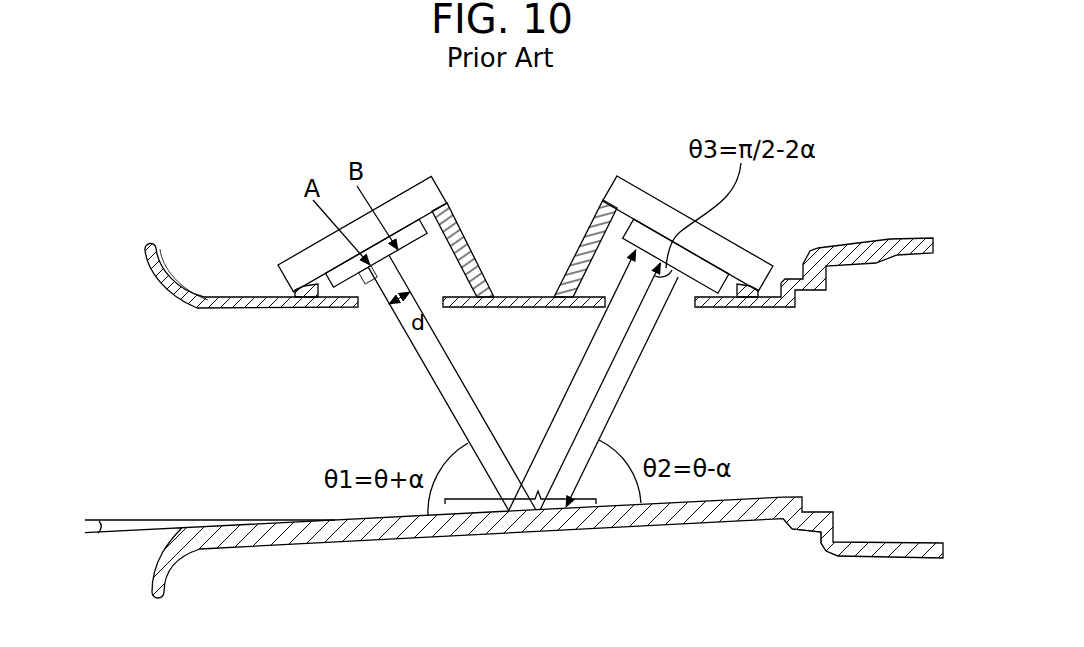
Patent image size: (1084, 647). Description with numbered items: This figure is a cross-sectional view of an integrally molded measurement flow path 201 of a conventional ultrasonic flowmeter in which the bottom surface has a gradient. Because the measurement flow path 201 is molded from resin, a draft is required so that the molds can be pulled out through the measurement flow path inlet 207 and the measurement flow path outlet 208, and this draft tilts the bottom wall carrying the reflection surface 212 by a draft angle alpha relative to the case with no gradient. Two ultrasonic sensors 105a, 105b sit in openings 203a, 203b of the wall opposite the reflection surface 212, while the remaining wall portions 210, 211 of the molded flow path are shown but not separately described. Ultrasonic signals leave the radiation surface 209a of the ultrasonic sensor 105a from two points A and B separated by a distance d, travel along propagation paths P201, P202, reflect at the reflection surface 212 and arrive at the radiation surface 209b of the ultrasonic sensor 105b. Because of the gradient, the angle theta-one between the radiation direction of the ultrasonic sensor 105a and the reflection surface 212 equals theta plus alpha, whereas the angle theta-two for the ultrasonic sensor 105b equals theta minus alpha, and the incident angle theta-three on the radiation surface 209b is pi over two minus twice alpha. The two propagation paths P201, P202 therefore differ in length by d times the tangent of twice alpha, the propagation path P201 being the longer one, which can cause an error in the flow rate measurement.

The ultrasonic sensor 105a is at (408, 190).
The ultrasonic sensor 105b is at (625, 180).
The opening 203a is at (428, 280).
The opening 203b is at (622, 275).
The measurement flow path inlet 207 is at (225, 295).
The measurement flow path outlet 208 is at (866, 248).
The radiation surface 209a is at (337, 290).
The radiation surface 209b is at (684, 282).
The base plate stepped end 210 is at (752, 498).
The housing hook portion 211 is at (210, 309).
The measurement flow path 201 is at (513, 534).
The reflection surface 212 is at (538, 489).
The propagation path P201 is at (434, 382).
The propagation path P202 is at (447, 352).